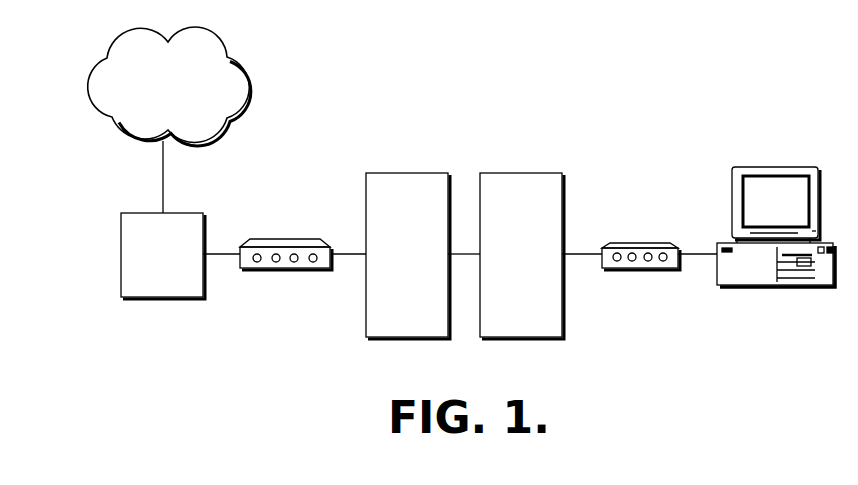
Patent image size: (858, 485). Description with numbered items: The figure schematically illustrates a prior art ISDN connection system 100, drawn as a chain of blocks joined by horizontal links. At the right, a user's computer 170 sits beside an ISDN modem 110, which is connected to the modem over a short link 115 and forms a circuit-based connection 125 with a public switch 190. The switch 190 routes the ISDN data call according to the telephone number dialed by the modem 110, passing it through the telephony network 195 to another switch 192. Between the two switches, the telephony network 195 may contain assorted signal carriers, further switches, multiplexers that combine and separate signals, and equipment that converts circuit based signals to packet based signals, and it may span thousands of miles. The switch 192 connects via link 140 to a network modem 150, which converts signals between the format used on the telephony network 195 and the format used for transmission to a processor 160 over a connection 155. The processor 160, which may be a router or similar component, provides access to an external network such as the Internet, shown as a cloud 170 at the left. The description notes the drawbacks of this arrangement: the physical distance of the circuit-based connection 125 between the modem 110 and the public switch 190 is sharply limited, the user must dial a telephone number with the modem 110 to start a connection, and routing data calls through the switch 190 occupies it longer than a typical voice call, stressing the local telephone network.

The ISDN connection system 100 is at (411, 121).
The ISDN modem 110 is at (626, 243).
The communication link 115 is at (710, 256).
The circuit-based connection 125 is at (575, 255).
The link 140 is at (349, 255).
The network modem 150 is at (285, 239).
The connection 155 is at (218, 255).
The processor 160 is at (162, 299).
The network / computer 170 is at (242, 66).
The public switch 190 is at (565, 207).
The switch 192 is at (375, 338).
The telephony network 195 is at (463, 254).